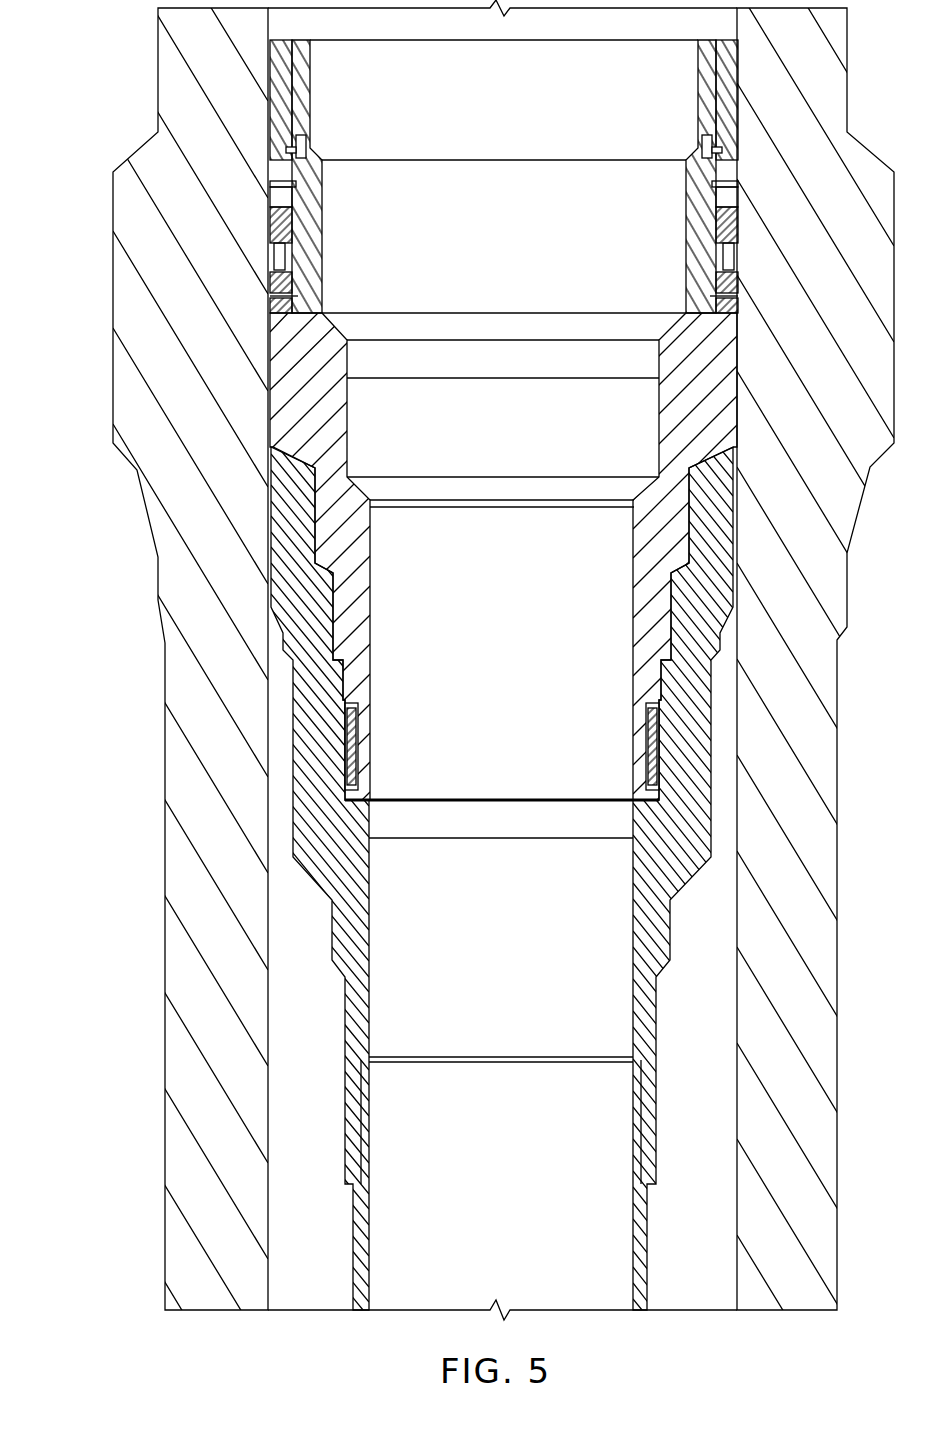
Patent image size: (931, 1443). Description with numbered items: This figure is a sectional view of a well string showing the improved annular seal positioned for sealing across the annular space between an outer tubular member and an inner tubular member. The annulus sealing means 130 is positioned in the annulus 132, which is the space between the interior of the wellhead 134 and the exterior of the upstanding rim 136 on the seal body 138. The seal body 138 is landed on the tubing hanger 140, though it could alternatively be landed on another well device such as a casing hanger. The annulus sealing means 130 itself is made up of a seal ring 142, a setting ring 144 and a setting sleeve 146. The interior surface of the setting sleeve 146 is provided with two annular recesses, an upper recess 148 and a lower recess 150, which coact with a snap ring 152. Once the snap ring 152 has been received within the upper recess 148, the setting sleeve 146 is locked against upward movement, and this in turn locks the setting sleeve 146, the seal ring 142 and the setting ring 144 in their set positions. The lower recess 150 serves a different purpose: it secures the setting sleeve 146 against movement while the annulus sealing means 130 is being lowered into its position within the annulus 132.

The annulus sealing means 130 is at (332, 287).
The annulus 132 is at (285, 192).
The wellhead 134 is at (118, 315).
The upstanding rim 136 is at (322, 230).
The seal body 138 is at (347, 440).
The tubing hanger 140 is at (363, 943).
The seal ring 142 is at (272, 227).
The setting ring 144 is at (272, 278).
The setting sleeve 146 is at (272, 85).
The upper recess 148 is at (307, 143).
The lower recess 150 is at (292, 182).
The snap ring 152 is at (288, 150).